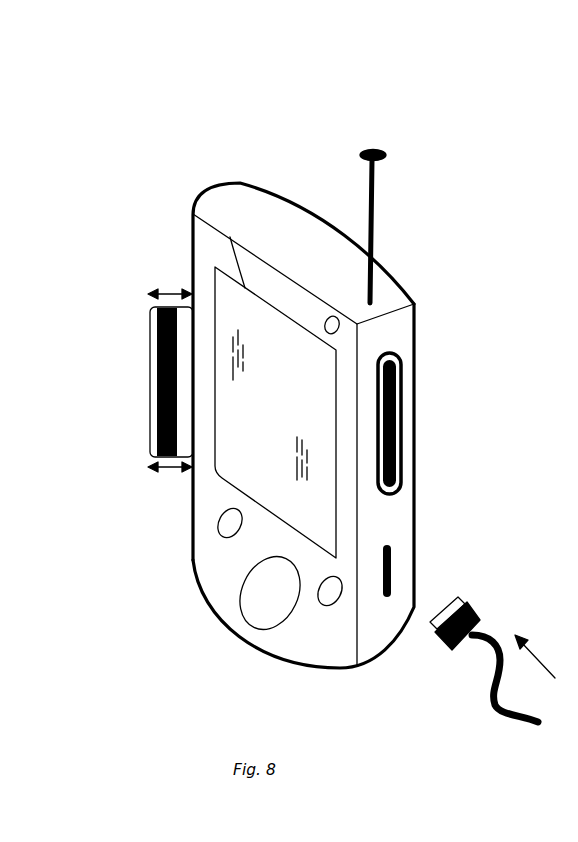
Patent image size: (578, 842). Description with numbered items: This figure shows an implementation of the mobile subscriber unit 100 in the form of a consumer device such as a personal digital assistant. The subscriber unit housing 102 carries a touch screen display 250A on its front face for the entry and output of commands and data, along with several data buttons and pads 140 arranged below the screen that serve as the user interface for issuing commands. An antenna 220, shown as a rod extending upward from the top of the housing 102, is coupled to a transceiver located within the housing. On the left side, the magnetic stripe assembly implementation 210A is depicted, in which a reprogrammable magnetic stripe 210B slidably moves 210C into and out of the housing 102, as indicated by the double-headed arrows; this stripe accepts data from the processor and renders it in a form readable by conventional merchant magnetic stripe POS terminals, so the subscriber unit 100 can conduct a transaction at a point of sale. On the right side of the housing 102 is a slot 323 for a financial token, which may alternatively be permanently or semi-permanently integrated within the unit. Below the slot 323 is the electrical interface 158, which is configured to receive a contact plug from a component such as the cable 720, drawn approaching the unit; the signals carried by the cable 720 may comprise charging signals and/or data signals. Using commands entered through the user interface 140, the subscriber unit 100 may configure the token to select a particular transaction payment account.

The subscriber unit 100 is at (302, 116).
The housing 102 is at (257, 188).
The touch screen display 250A is at (230, 237).
The antenna 220 is at (374, 208).
The magnetic stripe assembly implementation 210A is at (127, 349).
The reprogrammable magnetic stripe 210B is at (150, 410).
The sliding movement 210C is at (167, 470).
The slot 323 is at (393, 463).
The electrical interface 158 is at (390, 567).
The data buttons and pads 140 is at (220, 535).
The cable 720 is at (510, 722).